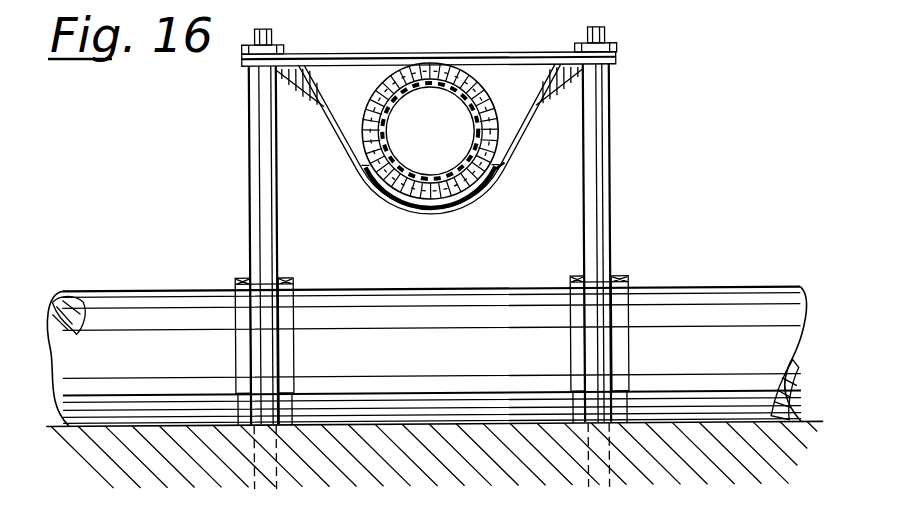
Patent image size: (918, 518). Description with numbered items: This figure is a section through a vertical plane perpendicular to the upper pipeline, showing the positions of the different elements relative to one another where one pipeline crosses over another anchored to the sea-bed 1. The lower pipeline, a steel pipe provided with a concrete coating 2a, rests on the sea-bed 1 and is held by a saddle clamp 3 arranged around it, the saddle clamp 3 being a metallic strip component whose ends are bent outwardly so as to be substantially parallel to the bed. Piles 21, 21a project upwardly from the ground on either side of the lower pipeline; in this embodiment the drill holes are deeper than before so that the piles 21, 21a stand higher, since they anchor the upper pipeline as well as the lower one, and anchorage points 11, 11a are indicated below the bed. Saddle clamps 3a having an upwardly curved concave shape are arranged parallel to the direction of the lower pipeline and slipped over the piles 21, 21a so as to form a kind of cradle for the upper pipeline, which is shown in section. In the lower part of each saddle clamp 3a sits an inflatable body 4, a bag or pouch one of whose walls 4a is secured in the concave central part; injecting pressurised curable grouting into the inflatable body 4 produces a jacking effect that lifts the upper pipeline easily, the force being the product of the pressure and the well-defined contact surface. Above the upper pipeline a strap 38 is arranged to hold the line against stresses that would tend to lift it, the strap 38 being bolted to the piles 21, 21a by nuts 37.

The sea-bed 1 is at (803, 424).
The concrete coating 2a is at (371, 150).
The saddle clamp 3 is at (240, 279).
The saddle clamp with upwardly curved concave shape 3a is at (470, 206).
The inflatable body 4 is at (396, 212).
The wall of inflatable body 4a is at (504, 174).
The anchor 11 is at (596, 466).
The anchor 11a is at (262, 464).
The pile 21 is at (599, 208).
The pile 21a is at (262, 200).
The nut 37 is at (246, 51).
The strap 38 is at (525, 47).